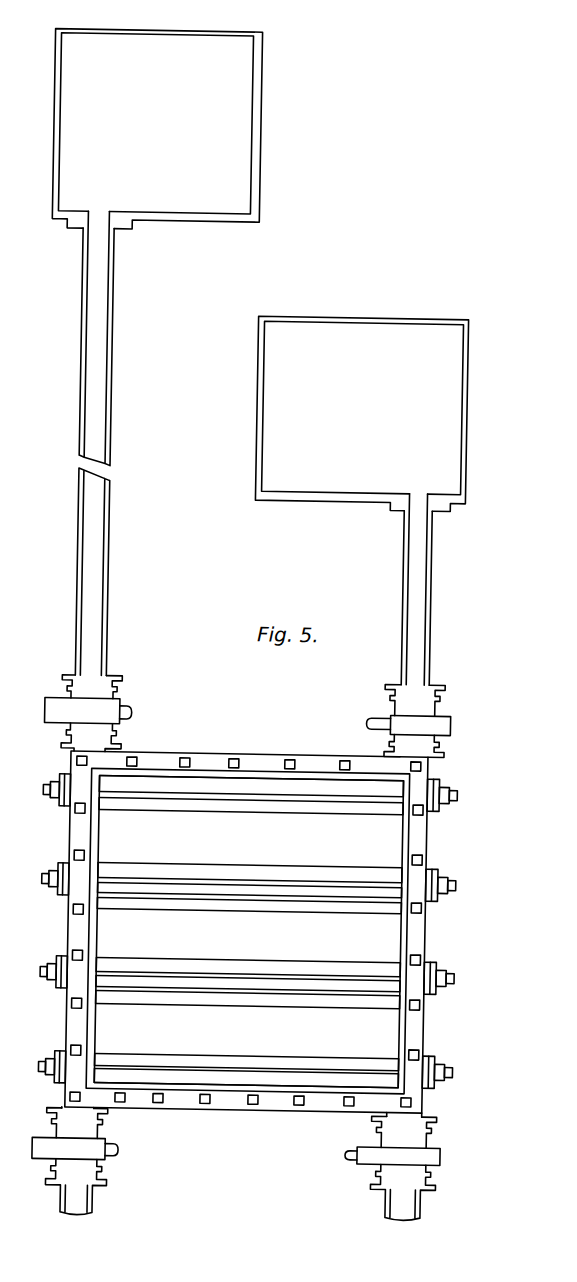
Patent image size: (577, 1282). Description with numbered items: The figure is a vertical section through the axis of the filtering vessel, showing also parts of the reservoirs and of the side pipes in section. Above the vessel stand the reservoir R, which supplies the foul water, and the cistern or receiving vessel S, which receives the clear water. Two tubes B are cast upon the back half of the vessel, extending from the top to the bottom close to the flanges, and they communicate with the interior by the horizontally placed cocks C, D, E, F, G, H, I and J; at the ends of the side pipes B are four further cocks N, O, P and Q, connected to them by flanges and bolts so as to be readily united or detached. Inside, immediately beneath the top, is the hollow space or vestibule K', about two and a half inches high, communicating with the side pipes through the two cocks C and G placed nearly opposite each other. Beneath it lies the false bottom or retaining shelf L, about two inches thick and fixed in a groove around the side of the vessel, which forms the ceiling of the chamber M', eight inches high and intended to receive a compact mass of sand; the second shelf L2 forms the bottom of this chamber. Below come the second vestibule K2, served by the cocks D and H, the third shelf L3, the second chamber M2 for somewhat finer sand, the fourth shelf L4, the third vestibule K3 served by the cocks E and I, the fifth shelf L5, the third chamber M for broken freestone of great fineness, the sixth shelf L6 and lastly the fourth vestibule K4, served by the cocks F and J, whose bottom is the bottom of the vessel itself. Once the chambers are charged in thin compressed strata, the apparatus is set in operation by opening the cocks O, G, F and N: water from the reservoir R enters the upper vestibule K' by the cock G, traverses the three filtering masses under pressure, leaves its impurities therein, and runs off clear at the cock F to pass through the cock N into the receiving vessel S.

The reservoir R is at (157, 130).
The cistern or receiving vessel S is at (361, 414).
The cock O is at (93, 714).
The cock N is at (395, 721).
The cock G is at (57, 780).
The cock H is at (55, 871).
The cock I is at (52, 967).
The cock J is at (51, 1059).
The cock C is at (447, 788).
The cock D is at (443, 881).
The cock E is at (440, 973).
The cock F is at (438, 1063).
The tube B is at (241, 1105).
The cock Q is at (85, 1161).
The cock P is at (384, 1168).
The hollow space or vestibule K' is at (251, 785).
The false bottom or retaining shelf L is at (251, 806).
The chamber M' is at (228, 829).
The second shelf L2 is at (250, 872).
The second vestibule K2 is at (250, 888).
The third shelf L3 is at (249, 903).
The second chamber M2 is at (228, 926).
The fourth shelf L4 is at (248, 966).
The third vestibule K3 is at (248, 982).
The fifth shelf L5 is at (248, 998).
The third chamber M is at (223, 1023).
The sixth shelf L6 is at (247, 1061).
The fourth vestibule K4 is at (246, 1078).